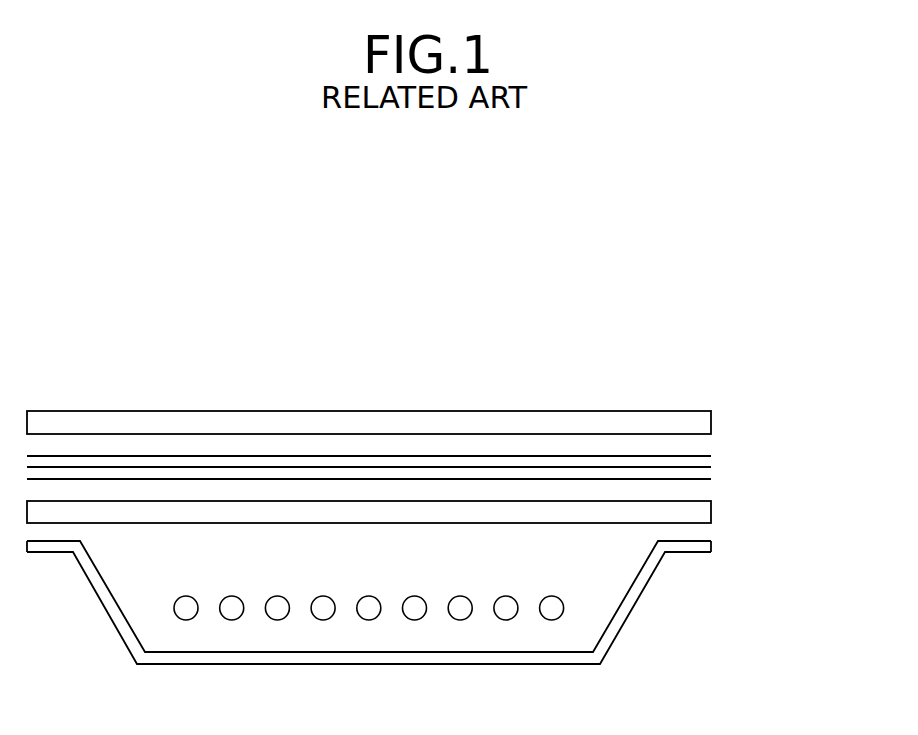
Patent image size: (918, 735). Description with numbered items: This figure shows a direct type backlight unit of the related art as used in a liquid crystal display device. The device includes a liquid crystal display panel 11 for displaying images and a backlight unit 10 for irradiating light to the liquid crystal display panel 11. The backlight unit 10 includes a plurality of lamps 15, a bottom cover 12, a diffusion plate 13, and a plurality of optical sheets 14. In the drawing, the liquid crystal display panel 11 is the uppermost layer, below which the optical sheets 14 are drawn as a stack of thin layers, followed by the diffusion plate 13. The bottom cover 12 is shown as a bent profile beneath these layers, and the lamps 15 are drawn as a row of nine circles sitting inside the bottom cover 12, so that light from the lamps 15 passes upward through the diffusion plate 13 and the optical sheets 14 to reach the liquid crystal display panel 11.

The backlight unit 10 is at (796, 462).
The liquid crystal display panel 11 is at (703, 421).
The bottom cover 12 is at (703, 549).
The diffusion plate 13 is at (703, 514).
The optical sheets 14 is at (729, 456).
The lamps 15 is at (551, 627).